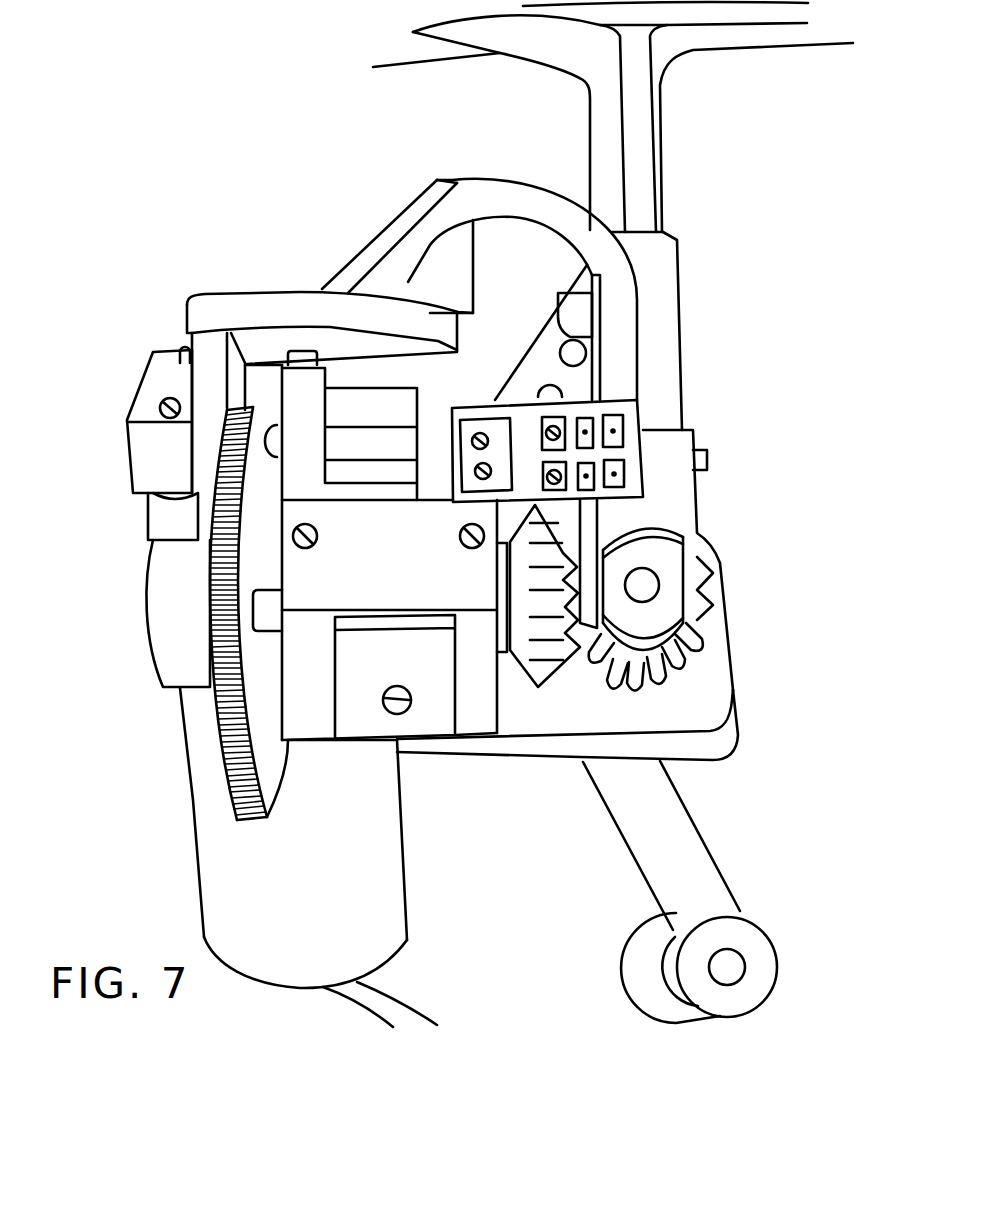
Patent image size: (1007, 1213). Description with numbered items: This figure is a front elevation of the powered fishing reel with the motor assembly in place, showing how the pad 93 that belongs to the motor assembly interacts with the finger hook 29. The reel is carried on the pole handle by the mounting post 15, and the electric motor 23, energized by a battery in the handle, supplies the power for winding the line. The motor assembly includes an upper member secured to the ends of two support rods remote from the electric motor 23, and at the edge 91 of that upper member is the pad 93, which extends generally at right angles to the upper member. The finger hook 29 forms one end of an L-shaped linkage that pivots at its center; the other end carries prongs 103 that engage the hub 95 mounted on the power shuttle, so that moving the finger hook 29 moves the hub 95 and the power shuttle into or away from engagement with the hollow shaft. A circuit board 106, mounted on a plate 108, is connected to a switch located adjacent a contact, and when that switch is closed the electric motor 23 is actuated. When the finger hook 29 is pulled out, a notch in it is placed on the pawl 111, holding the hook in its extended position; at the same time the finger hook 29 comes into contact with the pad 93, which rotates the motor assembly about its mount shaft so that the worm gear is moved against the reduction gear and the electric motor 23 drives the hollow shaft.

The mounting post 15 is at (638, 140).
The finger hook 29 is at (528, 203).
The pad 93 is at (462, 265).
The edge 91 is at (460, 340).
The pawl 111 is at (577, 317).
The circuit board 106 is at (630, 450).
The prongs 103 is at (590, 563).
The hub 95 is at (670, 580).
The plate 108 is at (305, 558).
The electric motor 23 is at (383, 805).